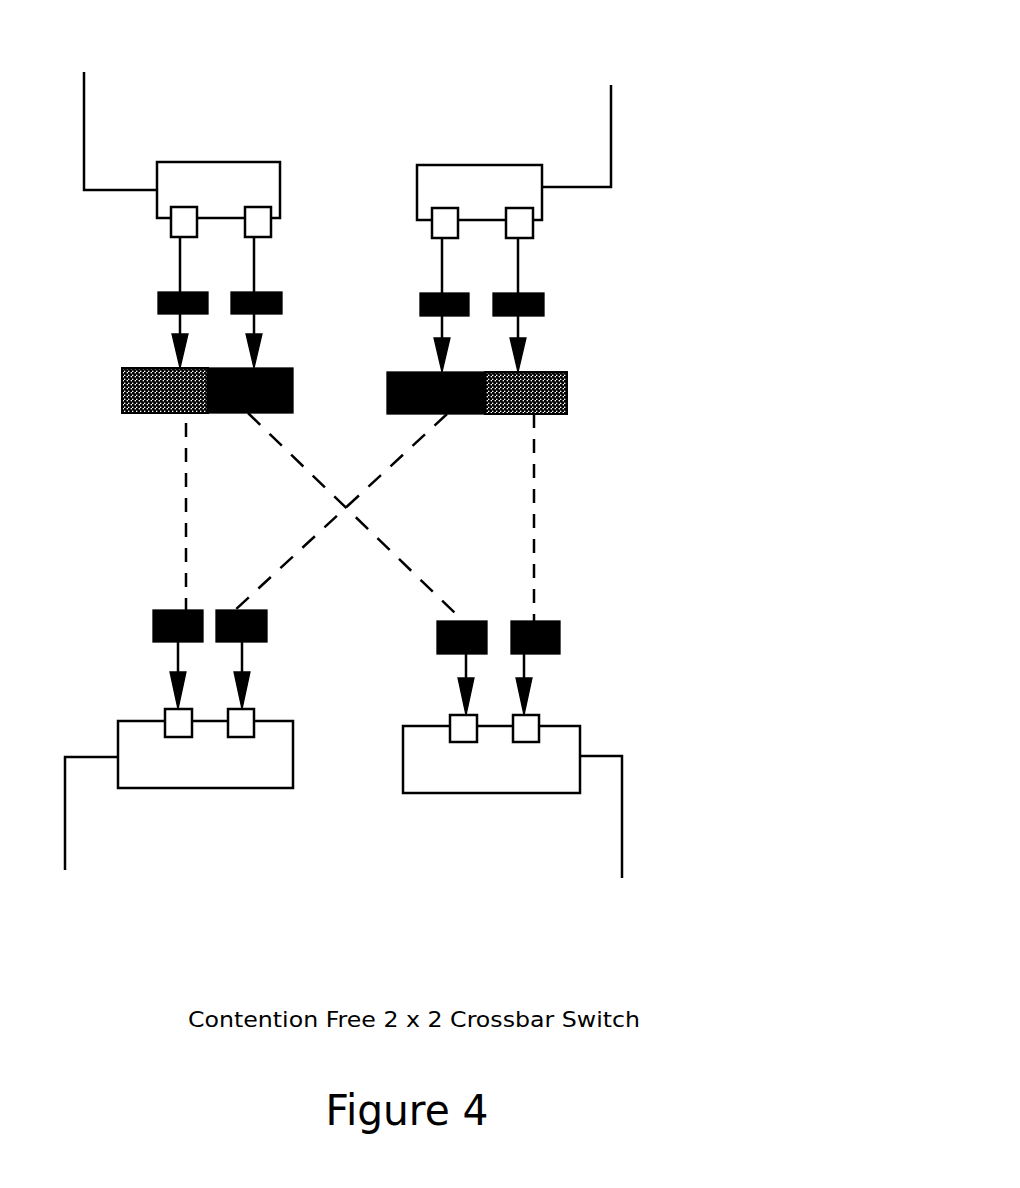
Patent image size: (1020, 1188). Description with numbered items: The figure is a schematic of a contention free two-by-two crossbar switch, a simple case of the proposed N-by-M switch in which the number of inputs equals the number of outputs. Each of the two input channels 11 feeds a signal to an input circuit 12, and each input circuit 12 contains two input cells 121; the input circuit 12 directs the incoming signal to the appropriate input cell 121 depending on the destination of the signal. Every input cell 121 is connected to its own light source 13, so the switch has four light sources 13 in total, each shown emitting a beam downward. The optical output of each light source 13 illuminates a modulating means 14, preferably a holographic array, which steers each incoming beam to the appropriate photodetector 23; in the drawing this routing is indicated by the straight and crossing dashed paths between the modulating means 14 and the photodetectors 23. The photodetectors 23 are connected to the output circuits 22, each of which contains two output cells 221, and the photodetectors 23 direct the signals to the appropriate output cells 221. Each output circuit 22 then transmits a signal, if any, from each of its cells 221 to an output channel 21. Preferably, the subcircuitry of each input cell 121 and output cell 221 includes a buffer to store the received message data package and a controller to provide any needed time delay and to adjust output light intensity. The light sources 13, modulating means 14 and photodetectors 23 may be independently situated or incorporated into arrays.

The input channel 11 is at (611, 129).
The input circuit 12 is at (223, 167).
The input cell 121 is at (446, 212).
The light source 13 is at (544, 307).
The modulating means 14 is at (567, 400).
The photodetector 23 is at (560, 645).
The output circuit 22 is at (198, 788).
The output cell 221 is at (458, 738).
The output channel 21 is at (622, 817).